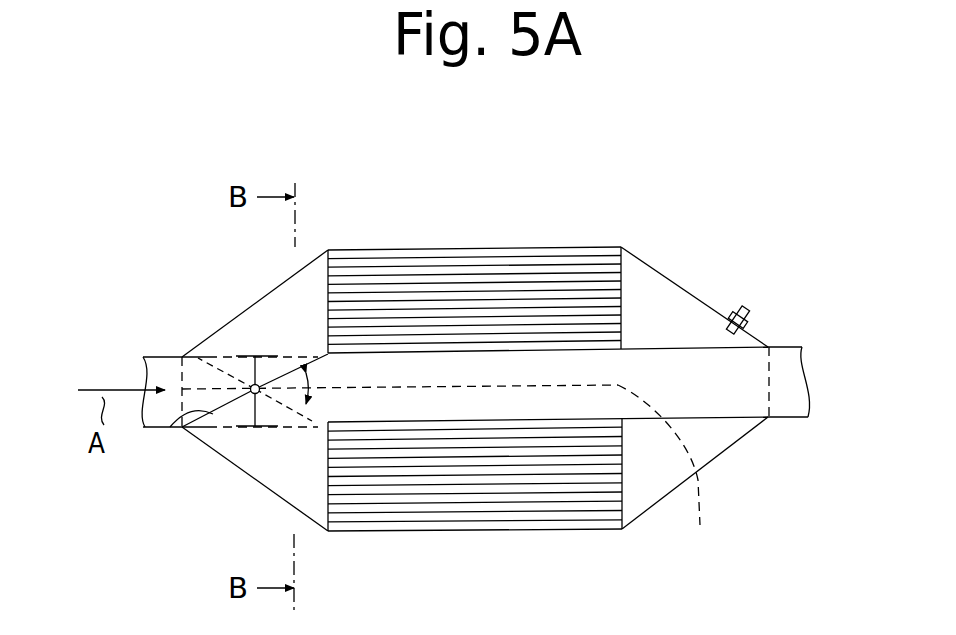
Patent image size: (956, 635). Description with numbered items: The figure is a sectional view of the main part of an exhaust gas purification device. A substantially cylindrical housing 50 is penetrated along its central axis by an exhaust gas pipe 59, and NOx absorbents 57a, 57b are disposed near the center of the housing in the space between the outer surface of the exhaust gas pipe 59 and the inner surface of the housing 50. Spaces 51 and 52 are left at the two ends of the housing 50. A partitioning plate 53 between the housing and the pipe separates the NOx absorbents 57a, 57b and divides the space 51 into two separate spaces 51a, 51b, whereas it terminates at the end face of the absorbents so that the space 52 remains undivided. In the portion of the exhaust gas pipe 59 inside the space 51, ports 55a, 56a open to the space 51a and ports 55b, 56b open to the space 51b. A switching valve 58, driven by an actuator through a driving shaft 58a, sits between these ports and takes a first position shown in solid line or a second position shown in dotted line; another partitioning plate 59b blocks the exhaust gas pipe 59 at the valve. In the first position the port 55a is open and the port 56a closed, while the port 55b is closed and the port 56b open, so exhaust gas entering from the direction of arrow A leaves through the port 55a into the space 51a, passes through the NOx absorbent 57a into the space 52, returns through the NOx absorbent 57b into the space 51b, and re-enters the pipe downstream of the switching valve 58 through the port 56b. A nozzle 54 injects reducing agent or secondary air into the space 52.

The housing 50 is at (477, 248).
The space 51 is at (243, 402).
The space 51a is at (237, 327).
The space 51b is at (313, 503).
The space 52 is at (657, 277).
The partitioning plate 53 is at (669, 476).
The nozzle 54 is at (747, 307).
The port 55a is at (219, 357).
The port 55b is at (228, 425).
The port 56a is at (290, 347).
The port 56b is at (280, 423).
The NOx absorbent 57a is at (405, 278).
The NOx absorbent 57b is at (520, 515).
The switching valve 58 is at (182, 427).
The driving shaft 58a is at (250, 397).
The exhaust gas pipe 59 is at (727, 408).
The partitioning plate 59b is at (180, 373).